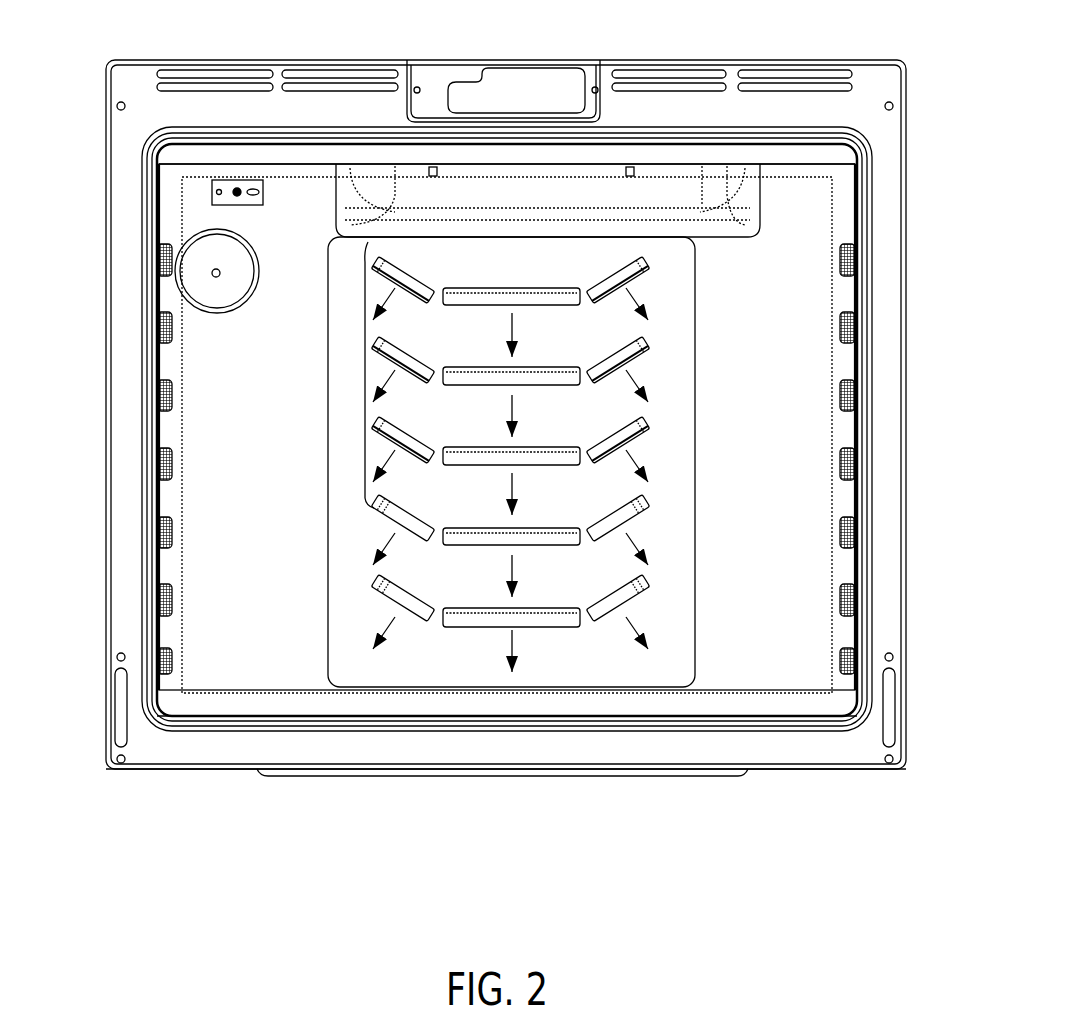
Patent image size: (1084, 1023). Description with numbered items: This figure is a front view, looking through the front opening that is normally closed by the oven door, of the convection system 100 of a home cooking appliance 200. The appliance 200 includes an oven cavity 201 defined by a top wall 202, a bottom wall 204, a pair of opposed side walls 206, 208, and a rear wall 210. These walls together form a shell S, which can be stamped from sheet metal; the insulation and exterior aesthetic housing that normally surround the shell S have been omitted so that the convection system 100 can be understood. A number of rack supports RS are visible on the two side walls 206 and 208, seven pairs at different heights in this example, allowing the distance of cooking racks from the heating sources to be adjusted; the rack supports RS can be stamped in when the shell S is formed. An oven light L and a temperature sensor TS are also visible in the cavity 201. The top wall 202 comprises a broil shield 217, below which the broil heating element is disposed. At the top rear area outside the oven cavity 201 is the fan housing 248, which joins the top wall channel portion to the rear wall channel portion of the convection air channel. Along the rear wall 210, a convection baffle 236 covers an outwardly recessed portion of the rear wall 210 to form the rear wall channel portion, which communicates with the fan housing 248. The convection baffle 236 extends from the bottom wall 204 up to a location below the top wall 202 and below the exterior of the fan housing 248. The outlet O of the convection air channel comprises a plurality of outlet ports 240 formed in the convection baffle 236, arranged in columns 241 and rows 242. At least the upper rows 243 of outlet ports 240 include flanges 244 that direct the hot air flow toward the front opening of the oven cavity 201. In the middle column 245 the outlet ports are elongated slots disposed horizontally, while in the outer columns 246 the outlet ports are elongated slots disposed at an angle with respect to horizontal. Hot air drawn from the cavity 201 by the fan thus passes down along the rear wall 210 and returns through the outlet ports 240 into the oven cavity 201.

The convection system 100 is at (410, 187).
The home cooking appliance 200 is at (378, 792).
The oven cavity 201 is at (785, 616).
The top wall 202 is at (203, 150).
The bottom wall 204 is at (677, 733).
The side wall 206 is at (157, 362).
The side wall 208 is at (855, 366).
The rear wall 210 is at (248, 673).
The broil shield 217 is at (180, 157).
The convection baffle 236 is at (675, 675).
The outlet ports 240 is at (418, 433).
The columns 241 is at (615, 618).
The rows 242 is at (374, 340).
The upper rows 243 is at (646, 423).
The flanges 244 is at (410, 294).
The middle column 245 is at (507, 263).
The outer columns 246 is at (420, 270).
The fan housing 248 is at (683, 189).
The rack supports RS is at (163, 324).
The temperature sensor TS is at (237, 182).
The oven light L is at (227, 302).
The shell S is at (905, 120).
The outlet O is at (365, 436).